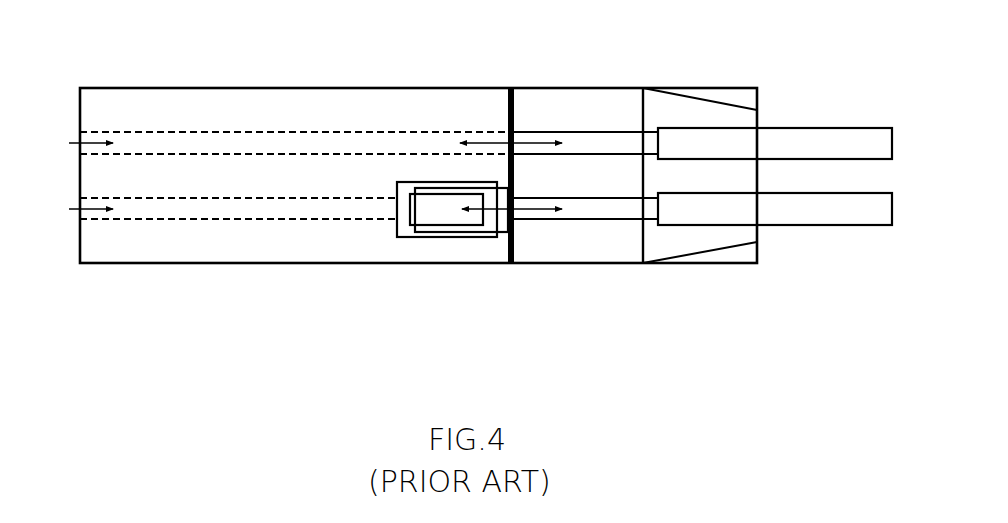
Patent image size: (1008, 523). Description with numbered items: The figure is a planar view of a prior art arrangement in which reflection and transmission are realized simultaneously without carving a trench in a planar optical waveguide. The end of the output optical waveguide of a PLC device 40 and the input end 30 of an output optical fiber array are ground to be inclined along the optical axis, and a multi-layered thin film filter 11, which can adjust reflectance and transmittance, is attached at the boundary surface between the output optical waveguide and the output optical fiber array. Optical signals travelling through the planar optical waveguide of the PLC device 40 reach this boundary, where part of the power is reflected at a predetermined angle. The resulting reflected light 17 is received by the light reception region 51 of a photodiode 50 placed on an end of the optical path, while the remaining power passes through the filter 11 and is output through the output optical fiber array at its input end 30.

The PLC device 40 is at (233, 88).
The multi-layered thin film filter 11 is at (515, 247).
The input end of output optical fiber array 30 is at (608, 263).
The photodiode 50 is at (405, 237).
The light reception region 51 is at (444, 232).
The reflected light 17 is at (480, 228).